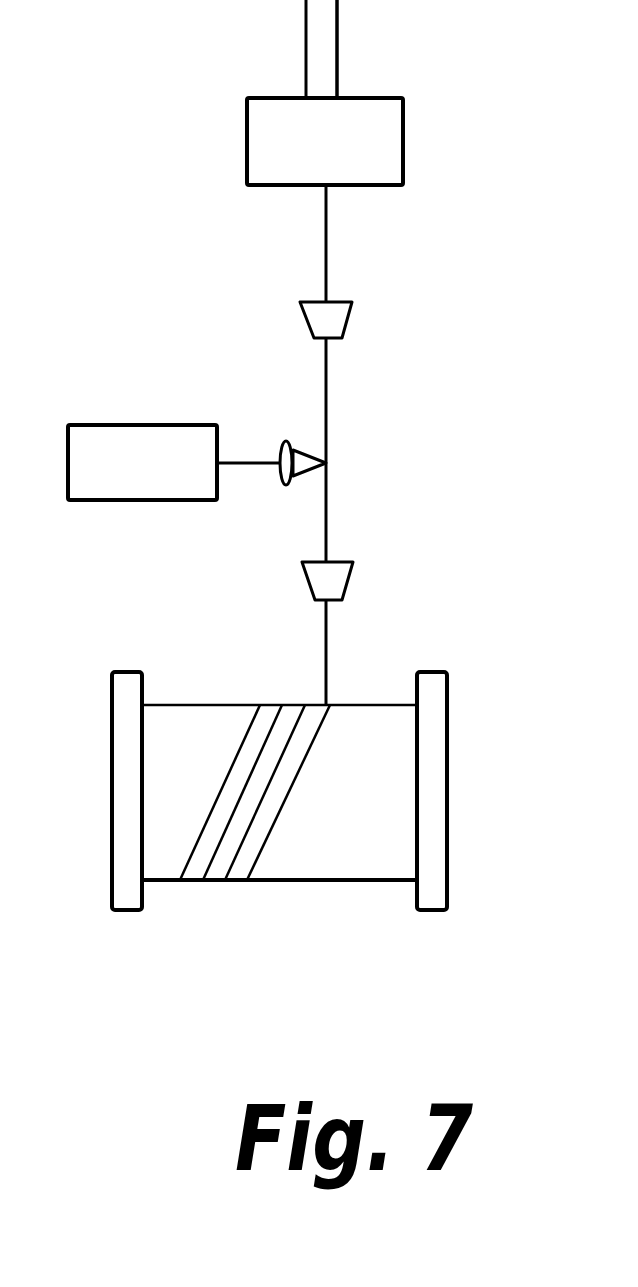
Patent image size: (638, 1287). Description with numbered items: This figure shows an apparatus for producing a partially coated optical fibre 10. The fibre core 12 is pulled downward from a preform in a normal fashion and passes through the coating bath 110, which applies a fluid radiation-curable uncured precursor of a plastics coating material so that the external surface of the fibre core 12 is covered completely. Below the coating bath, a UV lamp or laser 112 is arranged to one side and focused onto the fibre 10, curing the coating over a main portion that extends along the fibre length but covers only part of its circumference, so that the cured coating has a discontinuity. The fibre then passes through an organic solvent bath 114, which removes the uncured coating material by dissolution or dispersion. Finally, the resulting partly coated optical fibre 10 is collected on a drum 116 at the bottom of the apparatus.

The partially coated optical fibre 10 is at (330, 665).
The fibre core 12 is at (326, 262).
The coating bath 110 is at (335, 323).
The UV lamp or laser 112 is at (123, 488).
The organic solvent bath 114 is at (338, 583).
The drum 116 is at (432, 823).